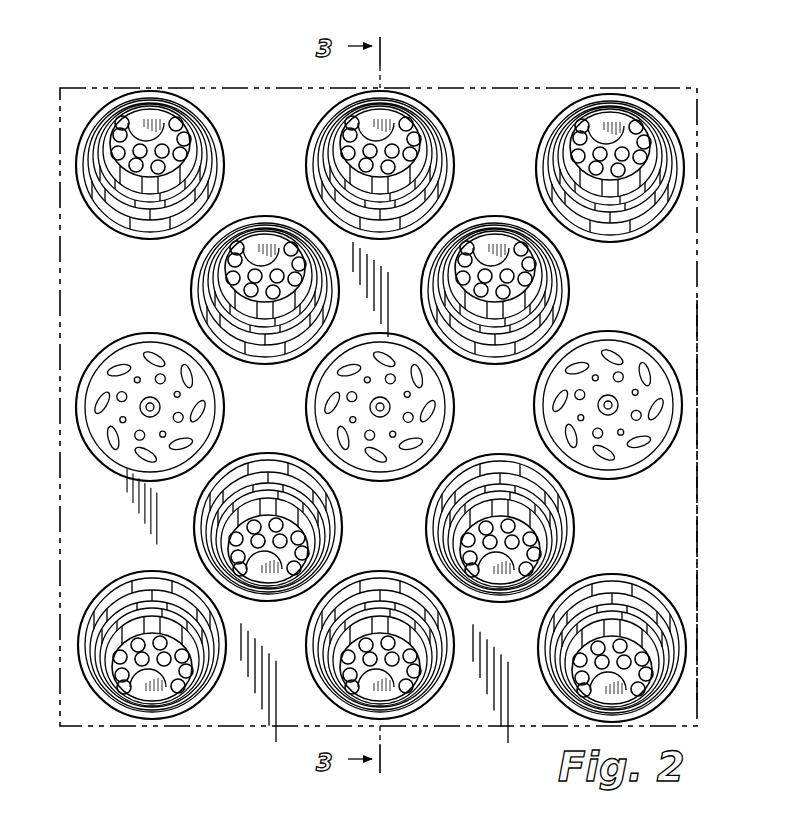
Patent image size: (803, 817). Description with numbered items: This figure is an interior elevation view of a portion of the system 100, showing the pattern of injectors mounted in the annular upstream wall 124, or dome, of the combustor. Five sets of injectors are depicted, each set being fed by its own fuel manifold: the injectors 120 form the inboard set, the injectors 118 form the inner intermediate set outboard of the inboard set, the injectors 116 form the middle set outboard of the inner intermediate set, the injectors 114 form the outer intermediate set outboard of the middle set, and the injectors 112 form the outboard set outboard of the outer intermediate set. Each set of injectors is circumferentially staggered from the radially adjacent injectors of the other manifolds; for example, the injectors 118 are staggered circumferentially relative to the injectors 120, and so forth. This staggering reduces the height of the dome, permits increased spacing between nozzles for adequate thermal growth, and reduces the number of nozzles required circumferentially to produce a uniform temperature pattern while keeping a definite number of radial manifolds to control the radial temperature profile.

The system 100 is at (713, 250).
The injectors 112 is at (668, 111).
The injectors 114 is at (509, 206).
The injectors 116 is at (664, 348).
The injectors 118 is at (511, 458).
The injectors 120 is at (649, 581).
The annular upstream wall 124 is at (686, 504).